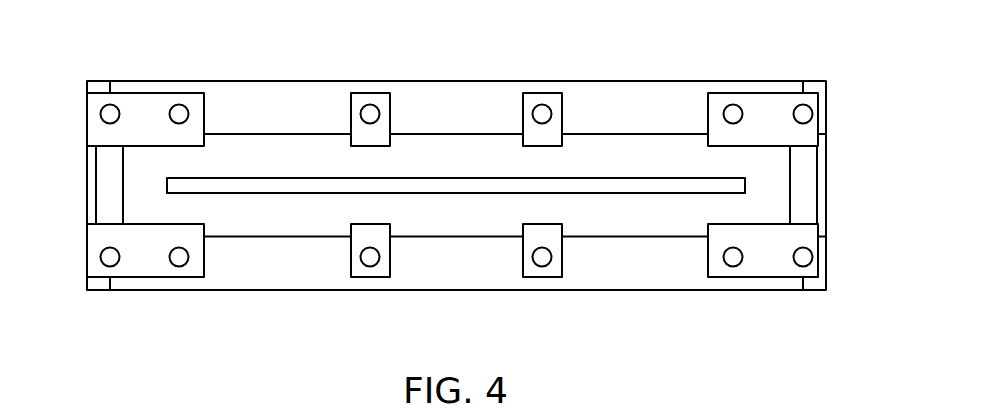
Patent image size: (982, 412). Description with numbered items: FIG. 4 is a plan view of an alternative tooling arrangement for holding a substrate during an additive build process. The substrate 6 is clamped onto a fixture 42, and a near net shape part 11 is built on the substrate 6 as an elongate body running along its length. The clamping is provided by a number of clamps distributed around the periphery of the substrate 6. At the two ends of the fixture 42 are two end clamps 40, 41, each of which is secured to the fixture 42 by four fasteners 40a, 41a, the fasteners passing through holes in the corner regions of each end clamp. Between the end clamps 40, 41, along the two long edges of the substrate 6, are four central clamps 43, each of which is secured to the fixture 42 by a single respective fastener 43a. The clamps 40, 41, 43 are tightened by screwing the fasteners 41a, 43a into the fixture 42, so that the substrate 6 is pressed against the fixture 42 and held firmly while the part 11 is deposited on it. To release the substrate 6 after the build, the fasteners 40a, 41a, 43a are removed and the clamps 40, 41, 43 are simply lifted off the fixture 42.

The substrate 6 is at (260, 142).
The near net shape part 11 is at (308, 187).
The end clamp 40 is at (87, 205).
The fastener 40a is at (112, 267).
The end clamp 41 is at (826, 178).
The fastener 41a is at (732, 267).
The fixture 42 is at (270, 275).
The central clamp 43 is at (530, 93).
The fastener 43a is at (553, 113).